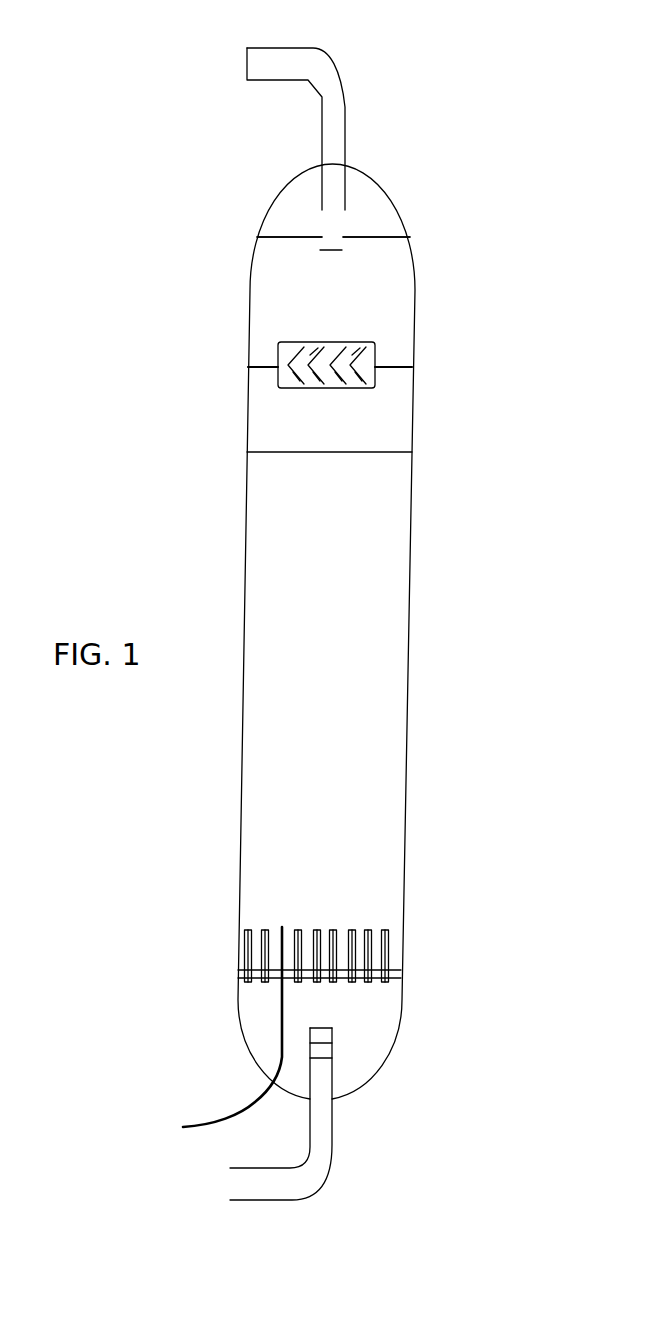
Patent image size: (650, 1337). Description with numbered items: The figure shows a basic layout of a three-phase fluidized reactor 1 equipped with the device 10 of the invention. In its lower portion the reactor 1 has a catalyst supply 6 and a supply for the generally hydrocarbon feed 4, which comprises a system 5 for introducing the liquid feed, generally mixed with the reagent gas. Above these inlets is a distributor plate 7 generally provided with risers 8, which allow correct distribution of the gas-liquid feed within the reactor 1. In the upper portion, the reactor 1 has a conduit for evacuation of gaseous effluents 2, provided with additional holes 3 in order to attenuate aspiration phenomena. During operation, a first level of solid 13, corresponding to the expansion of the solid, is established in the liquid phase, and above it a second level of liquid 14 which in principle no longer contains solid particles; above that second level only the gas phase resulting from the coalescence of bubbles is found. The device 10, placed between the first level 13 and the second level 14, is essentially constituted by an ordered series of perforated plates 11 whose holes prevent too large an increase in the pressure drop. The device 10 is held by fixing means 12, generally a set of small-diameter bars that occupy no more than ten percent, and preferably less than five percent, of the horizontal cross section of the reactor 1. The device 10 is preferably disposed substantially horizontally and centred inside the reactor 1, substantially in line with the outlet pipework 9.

The reactor 1 is at (407, 662).
The conduit for evacuation of gaseous effluents 2 is at (281, 121).
The additional holes 3 is at (367, 163).
The supply for the hydrocarbon feed 4 is at (269, 1114).
The system for the introduction of the liquid feed 5 is at (337, 1043).
The catalyst supply 6 is at (176, 1121).
The distributor plate 7 is at (393, 963).
The risers 8 is at (335, 930).
The outlet pipework 9 is at (333, 271).
The device 10 is at (308, 388).
The perforated plates 11 is at (361, 388).
The fixing means 12 is at (351, 333).
The first level of solid 13 is at (412, 415).
The second level of liquid 14 is at (381, 228).